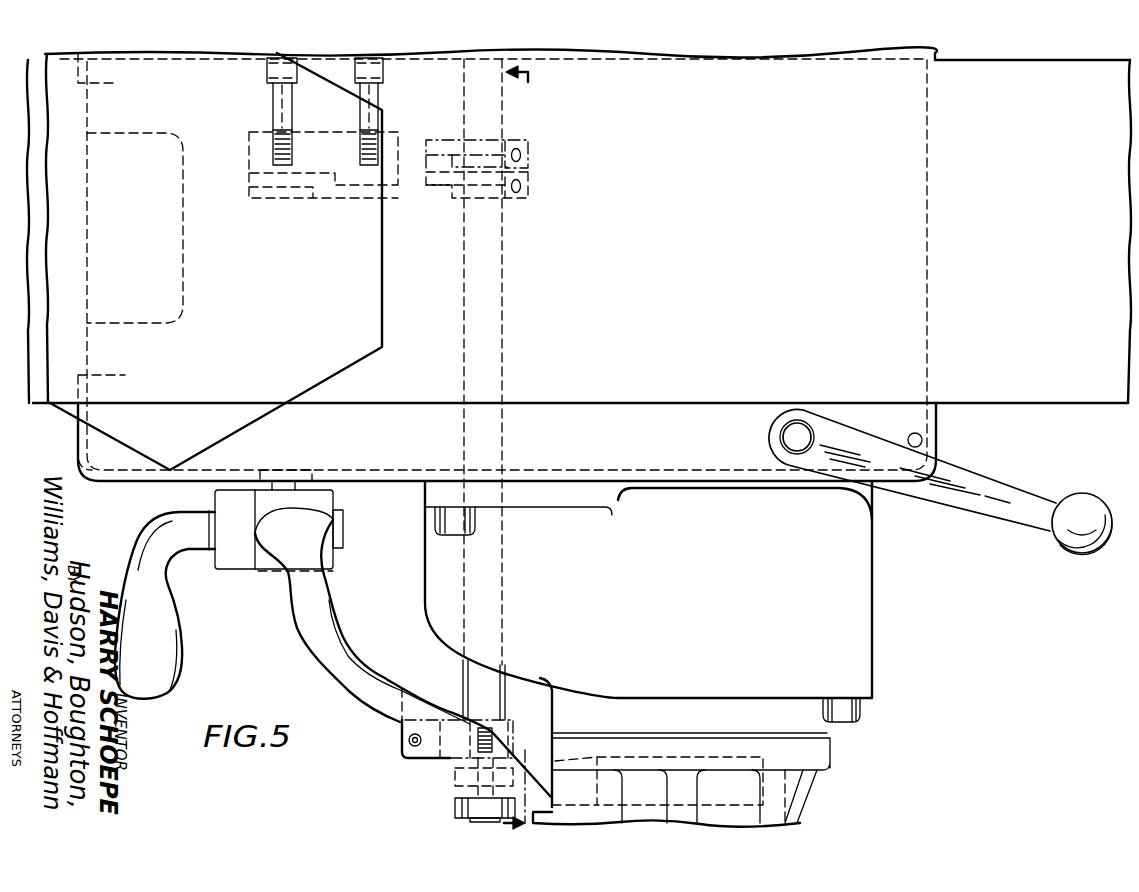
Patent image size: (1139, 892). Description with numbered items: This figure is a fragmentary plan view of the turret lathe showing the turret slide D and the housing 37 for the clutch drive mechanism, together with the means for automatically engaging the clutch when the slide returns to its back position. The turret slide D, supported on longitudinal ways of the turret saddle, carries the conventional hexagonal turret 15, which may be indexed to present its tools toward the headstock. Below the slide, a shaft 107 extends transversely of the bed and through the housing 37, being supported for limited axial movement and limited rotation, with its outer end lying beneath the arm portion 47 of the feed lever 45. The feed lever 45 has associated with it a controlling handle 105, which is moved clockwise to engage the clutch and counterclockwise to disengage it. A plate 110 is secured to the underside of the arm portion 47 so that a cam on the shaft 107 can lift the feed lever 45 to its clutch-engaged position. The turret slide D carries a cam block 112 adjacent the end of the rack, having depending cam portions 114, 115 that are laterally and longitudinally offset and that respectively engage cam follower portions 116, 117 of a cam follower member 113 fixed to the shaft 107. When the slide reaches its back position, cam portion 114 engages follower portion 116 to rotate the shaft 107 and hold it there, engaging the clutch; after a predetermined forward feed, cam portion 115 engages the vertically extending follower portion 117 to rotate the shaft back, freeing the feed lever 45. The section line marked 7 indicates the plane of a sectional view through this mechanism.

The turret slide D is at (1003, 393).
The turret 15 is at (362, 336).
The housing 37 is at (850, 623).
The feed lever 45 is at (345, 668).
The arm portion 47 is at (395, 711).
The controlling handle 105 is at (167, 647).
The shaft 107 is at (495, 355).
The plate 110 is at (446, 760).
The cam block 112 is at (250, 128).
The cam follower member 113 is at (532, 201).
The cam portion 114 is at (281, 198).
The cam portion 115 is at (408, 202).
The cam follower portion 116 is at (455, 192).
The cam follower portion 117 is at (436, 176).
The section line 7- 7 is at (517, 450).